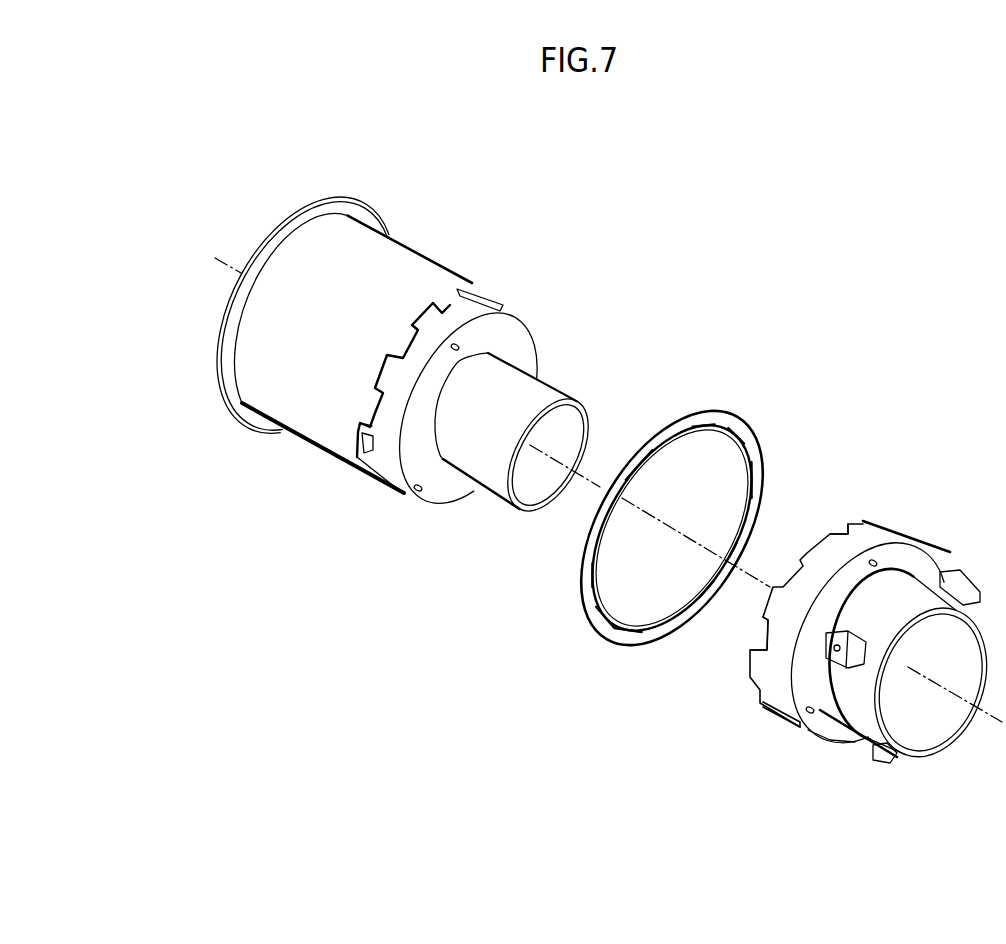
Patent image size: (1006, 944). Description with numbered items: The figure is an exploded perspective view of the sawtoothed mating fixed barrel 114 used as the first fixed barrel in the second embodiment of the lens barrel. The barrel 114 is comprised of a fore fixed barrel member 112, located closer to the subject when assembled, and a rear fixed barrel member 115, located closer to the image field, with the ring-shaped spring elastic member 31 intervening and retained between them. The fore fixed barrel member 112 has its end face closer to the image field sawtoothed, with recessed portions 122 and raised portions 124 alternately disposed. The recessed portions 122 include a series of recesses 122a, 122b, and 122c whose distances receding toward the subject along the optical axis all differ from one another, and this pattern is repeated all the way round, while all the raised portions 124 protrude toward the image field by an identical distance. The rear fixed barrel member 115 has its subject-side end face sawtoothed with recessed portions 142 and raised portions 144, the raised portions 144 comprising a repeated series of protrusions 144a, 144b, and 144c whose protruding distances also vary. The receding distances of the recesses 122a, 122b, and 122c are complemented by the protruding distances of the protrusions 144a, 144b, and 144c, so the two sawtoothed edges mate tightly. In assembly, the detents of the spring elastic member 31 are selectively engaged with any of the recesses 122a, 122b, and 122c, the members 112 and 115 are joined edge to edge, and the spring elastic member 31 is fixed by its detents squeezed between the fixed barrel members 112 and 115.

The fore fixed barrel member 112 is at (315, 252).
The sawtoothed mating fixed barrel 114 is at (807, 292).
The spring elastic member 31 is at (713, 404).
The recessed portions 122 is at (366, 456).
The recess 122a is at (473, 287).
The recess 122b is at (376, 362).
The recess 122c is at (430, 307).
The raised portions 124 is at (395, 425).
The recessed portions 142 is at (842, 519).
The raised portions 144 is at (768, 582).
The protrusion 144a is at (747, 672).
The protrusion 144b is at (757, 607).
The protrusion 144c is at (818, 530).
The rear fixed barrel member 115 is at (827, 733).